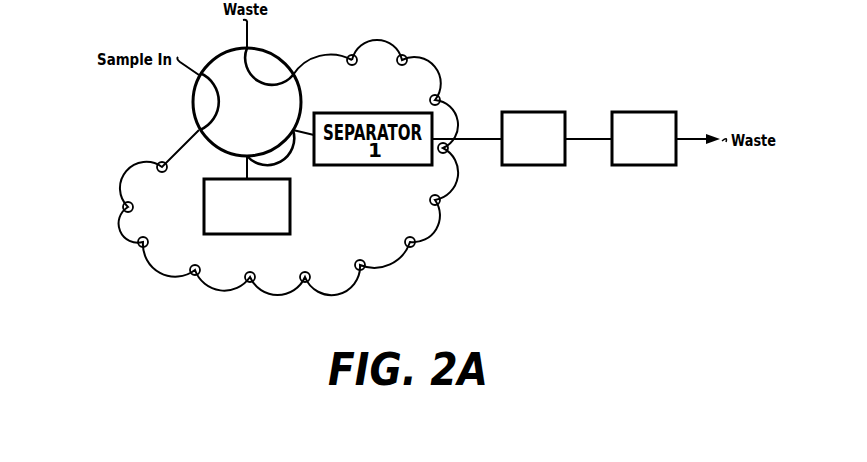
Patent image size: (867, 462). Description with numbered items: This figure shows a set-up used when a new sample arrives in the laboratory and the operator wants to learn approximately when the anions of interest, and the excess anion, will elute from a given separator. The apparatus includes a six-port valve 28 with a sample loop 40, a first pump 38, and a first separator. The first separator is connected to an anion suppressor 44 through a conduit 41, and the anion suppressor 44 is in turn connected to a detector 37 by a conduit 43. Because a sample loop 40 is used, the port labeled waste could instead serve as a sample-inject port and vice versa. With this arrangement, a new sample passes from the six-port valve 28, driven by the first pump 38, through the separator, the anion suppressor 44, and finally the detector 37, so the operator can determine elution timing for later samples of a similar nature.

The six-port valve 28 is at (260, 113).
The sample loop 40 is at (118, 221).
The first pump 38 is at (268, 234).
The conduit 41 is at (483, 140).
The conduit 43 is at (588, 140).
The anion suppressor 44 is at (543, 112).
The detector 37 is at (652, 112).